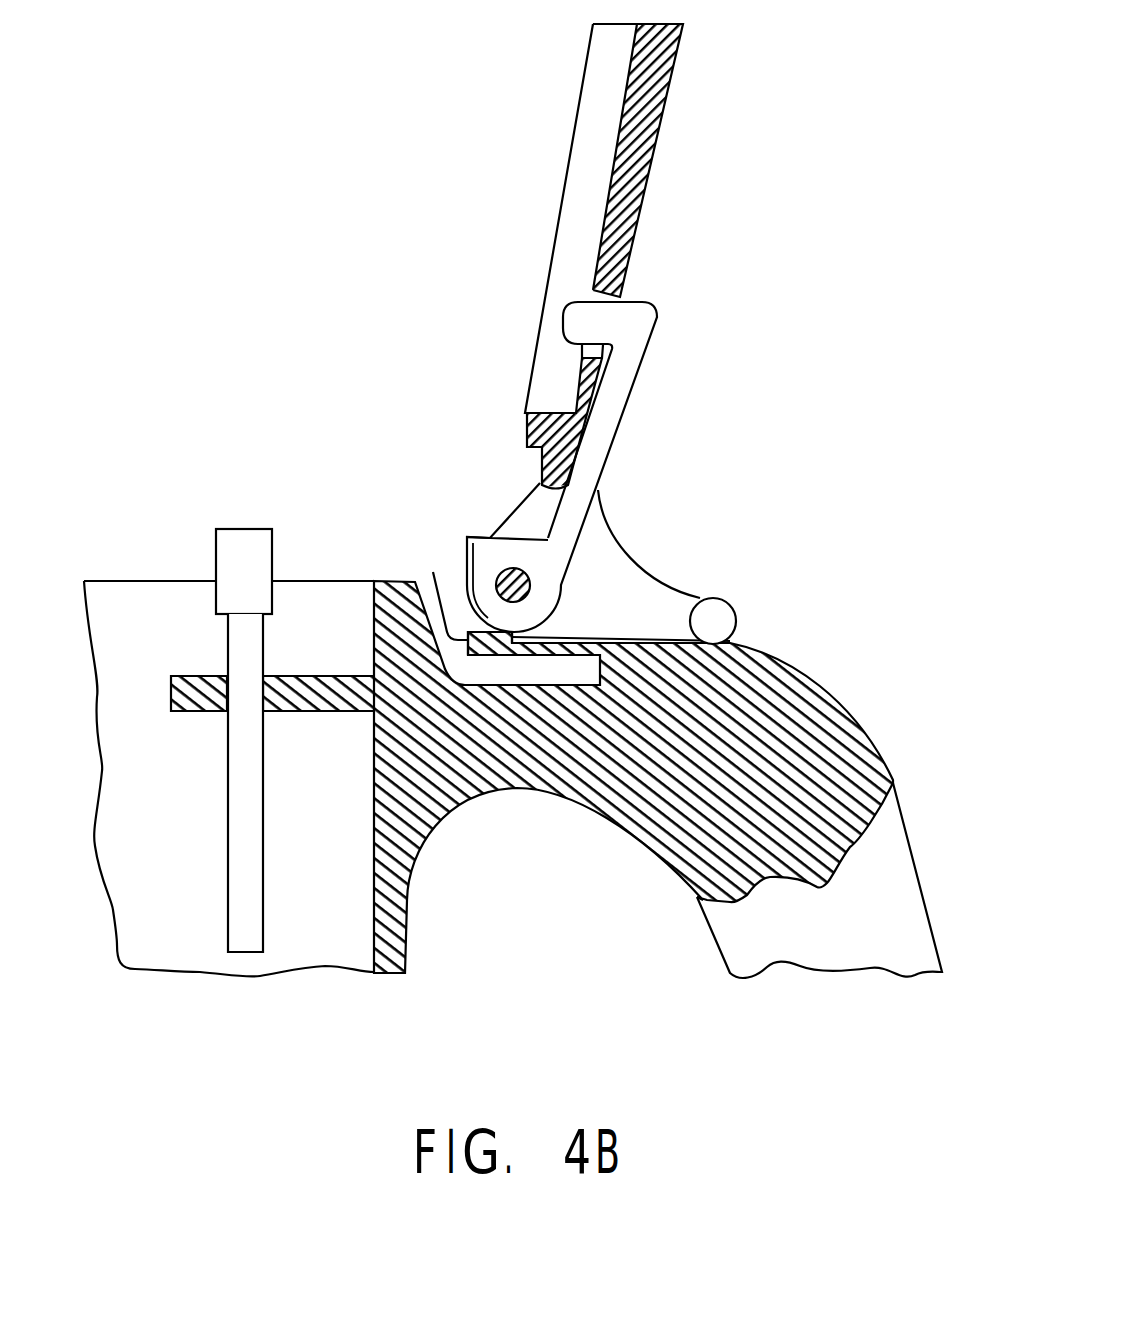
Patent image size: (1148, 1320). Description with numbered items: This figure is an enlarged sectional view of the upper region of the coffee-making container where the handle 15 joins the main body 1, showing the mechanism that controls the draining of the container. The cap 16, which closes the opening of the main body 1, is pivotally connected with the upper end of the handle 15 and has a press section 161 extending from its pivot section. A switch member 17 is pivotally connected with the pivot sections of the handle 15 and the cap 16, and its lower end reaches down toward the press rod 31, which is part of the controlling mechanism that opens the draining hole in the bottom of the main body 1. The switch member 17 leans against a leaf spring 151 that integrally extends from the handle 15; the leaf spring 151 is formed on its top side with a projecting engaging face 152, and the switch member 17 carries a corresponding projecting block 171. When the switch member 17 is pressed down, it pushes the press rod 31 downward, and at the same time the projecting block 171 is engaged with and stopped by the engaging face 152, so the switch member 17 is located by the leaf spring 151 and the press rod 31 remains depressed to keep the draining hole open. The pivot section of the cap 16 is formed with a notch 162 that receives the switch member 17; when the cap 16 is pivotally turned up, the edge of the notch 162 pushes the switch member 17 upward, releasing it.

The main body 1 is at (390, 945).
The handle 15 is at (762, 764).
The leaf spring 151 is at (547, 648).
The engaging face 152 is at (460, 576).
The cap 16 is at (637, 183).
The press section 161 is at (714, 620).
The notch 162 is at (550, 490).
The switch member 17 is at (607, 427).
The projecting block 171 is at (490, 538).
The press rod 31 is at (244, 659).